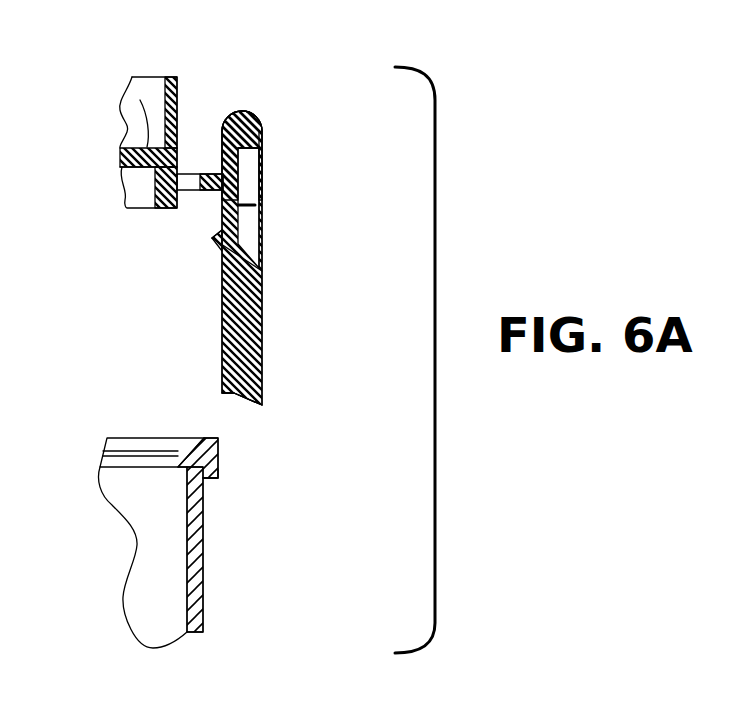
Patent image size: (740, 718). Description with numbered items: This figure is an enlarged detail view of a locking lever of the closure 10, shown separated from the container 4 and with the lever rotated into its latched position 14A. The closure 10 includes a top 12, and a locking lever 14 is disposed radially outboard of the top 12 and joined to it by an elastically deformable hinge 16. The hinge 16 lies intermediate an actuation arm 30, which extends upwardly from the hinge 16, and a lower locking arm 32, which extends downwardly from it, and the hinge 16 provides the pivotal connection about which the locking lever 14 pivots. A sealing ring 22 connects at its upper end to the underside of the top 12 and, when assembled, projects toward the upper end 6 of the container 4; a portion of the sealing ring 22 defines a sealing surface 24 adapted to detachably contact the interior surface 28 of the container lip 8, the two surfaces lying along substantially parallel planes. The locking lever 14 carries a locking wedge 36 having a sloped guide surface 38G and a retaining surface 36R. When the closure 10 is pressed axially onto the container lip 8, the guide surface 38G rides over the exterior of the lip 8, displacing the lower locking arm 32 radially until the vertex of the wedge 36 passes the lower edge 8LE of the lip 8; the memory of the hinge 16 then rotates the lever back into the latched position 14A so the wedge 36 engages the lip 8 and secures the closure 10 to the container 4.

The closure 10 is at (249, 66).
The top 12 is at (134, 110).
The elastically deformable hinge 16 is at (203, 172).
The sealing ring 22 is at (125, 184).
The sealing surface 24 is at (200, 192).
The actuation arm 30 is at (262, 126).
The locking lever 14 is at (262, 297).
The latched position 14A is at (262, 297).
The lower locking arm 32 is at (262, 368).
The locking wedge 36 is at (217, 243).
The retaining surface 36R is at (213, 233).
The groove 38G is at (220, 248).
The upper end 6 is at (107, 438).
The interior surface 28 is at (170, 449).
The container lip 8 is at (220, 458).
The lower edge 8LE is at (206, 480).
The container 4 is at (200, 603).